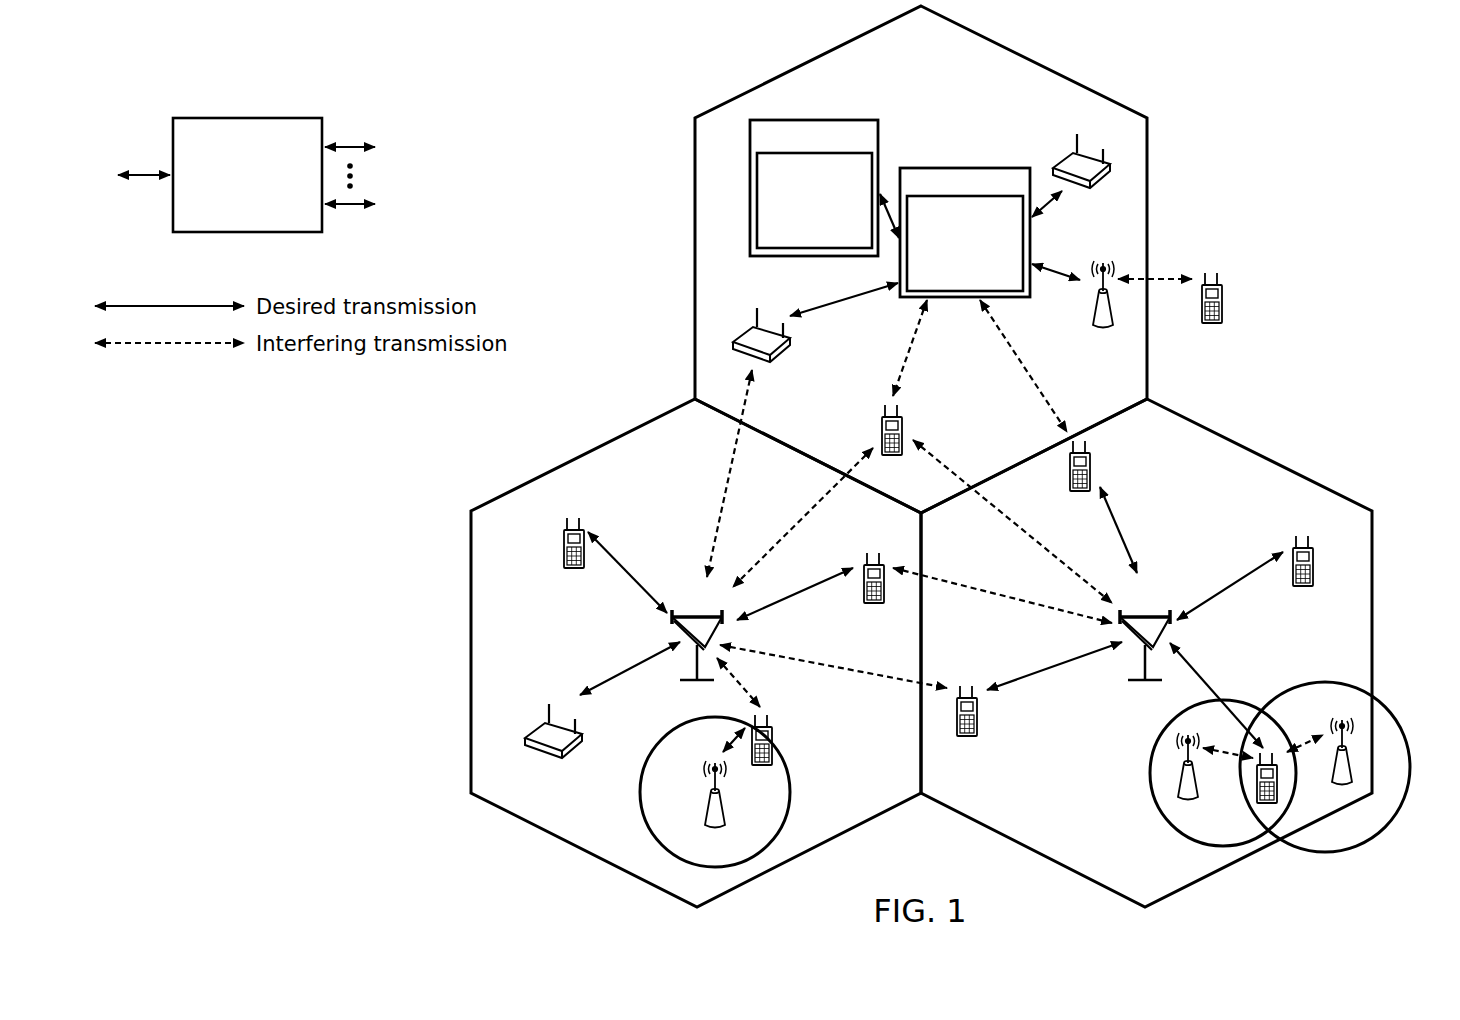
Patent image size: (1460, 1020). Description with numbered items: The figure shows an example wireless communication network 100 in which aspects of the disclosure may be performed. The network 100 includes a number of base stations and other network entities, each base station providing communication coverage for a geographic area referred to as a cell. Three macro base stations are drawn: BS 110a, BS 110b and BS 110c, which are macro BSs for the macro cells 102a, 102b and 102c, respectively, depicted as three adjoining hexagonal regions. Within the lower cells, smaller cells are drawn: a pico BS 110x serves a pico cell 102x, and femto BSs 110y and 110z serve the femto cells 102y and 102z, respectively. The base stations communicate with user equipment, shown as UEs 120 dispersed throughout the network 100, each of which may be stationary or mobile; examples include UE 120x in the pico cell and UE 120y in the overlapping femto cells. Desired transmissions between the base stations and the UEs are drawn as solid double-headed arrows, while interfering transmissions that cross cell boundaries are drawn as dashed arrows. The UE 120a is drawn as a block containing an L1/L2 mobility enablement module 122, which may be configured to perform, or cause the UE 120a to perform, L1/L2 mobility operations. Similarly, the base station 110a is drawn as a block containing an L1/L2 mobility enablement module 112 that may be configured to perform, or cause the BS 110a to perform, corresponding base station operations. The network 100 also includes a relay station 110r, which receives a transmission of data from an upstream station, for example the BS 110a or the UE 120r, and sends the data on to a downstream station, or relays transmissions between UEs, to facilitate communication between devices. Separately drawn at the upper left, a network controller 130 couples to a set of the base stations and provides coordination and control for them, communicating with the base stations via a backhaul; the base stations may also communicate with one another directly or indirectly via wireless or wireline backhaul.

The wireless communication network 100 is at (1300, 78).
The macro cell 102a is at (1030, 62).
The macro cell 102b is at (592, 452).
The macro cell 102c is at (1256, 454).
The pico cell 102x is at (662, 742).
The femto cell 102y is at (1157, 737).
The femto cell 102z is at (1319, 682).
The base station 110a is at (967, 170).
The base station 110b is at (690, 614).
The base station 110c is at (1140, 614).
The relay station 110r is at (1090, 318).
The pico base station 110x is at (724, 818).
The femto base station 110y is at (1197, 790).
The femto base station 110z is at (1350, 775).
The L1/L2 mobility enablement module 112 is at (924, 300).
The user equipment 120 is at (1091, 151).
The user equipment 120a is at (852, 121).
The user equipment 120r is at (1222, 316).
The user equipment 120x is at (776, 737).
The user equipment 120y is at (1257, 798).
The L1/L2 mobility enablement module 122 is at (752, 223).
The network controller 130 is at (244, 118).